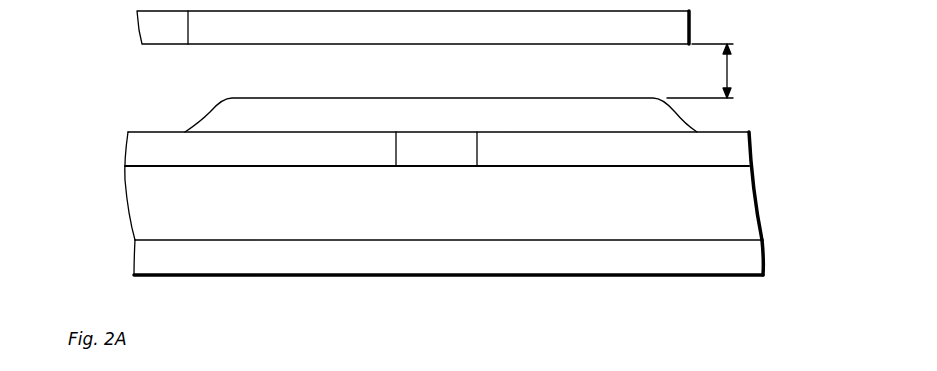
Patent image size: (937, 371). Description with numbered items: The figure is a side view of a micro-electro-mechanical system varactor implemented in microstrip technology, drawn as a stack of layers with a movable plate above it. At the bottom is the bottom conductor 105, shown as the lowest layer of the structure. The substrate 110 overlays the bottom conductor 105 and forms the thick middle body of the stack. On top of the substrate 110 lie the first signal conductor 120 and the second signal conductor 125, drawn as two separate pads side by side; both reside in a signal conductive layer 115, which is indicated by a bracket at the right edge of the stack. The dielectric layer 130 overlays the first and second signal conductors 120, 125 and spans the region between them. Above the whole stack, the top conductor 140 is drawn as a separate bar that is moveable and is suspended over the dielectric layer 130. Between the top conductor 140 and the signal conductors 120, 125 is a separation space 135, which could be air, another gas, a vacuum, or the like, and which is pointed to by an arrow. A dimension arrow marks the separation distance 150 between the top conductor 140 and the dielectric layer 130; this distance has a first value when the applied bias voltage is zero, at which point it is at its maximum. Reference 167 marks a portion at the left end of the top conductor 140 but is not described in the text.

The bottom conductor 105 is at (745, 263).
The substrate 110 is at (745, 215).
The signal conductive layer 115 is at (769, 132).
The first signal conductor 120 is at (259, 152).
The second signal conductor 125 is at (550, 157).
The dielectric layer 130 is at (431, 150).
The separation space 135 is at (157, 78).
The top conductor 140 is at (668, 25).
The separation distance 150 is at (730, 74).
The die edge portion 167 is at (146, 28).